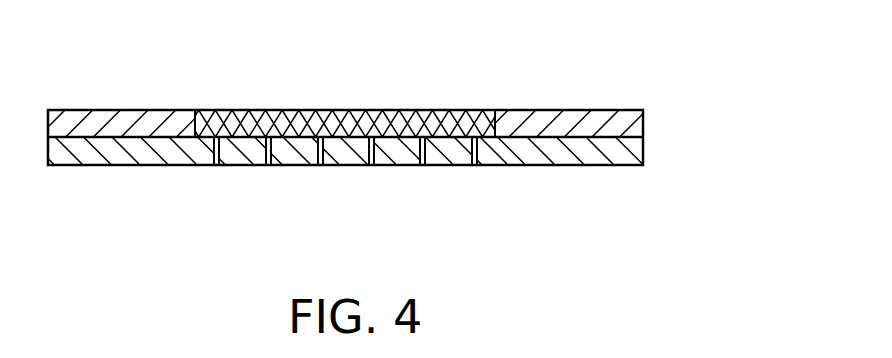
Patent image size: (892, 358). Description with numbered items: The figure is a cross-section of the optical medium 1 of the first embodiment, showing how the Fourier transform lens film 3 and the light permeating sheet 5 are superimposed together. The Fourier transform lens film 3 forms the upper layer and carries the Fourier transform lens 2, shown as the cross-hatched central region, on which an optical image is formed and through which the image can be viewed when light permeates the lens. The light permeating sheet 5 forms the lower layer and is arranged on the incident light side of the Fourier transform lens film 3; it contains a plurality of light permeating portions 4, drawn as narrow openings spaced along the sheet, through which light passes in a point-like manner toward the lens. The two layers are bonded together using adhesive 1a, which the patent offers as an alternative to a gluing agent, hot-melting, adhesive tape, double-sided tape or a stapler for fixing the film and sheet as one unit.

The optical medium 1 is at (653, 63).
The adhesive 1a is at (587, 133).
The Fourier transform lens 2 is at (397, 110).
The Fourier transform lens film 3 is at (642, 123).
The light permeating portion 4 is at (369, 168).
The light permeating sheet 5 is at (642, 152).